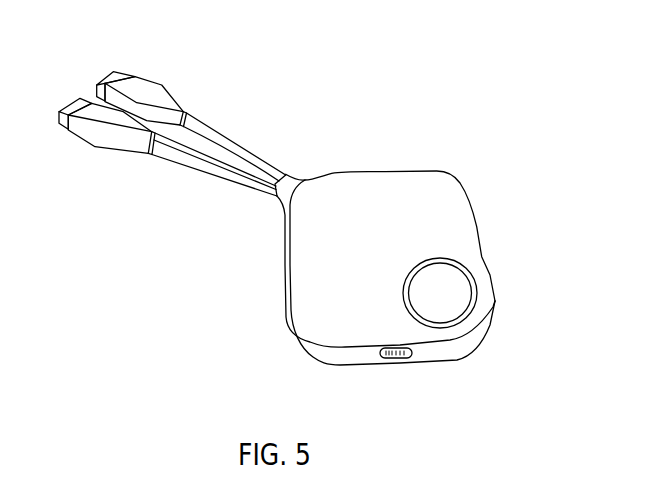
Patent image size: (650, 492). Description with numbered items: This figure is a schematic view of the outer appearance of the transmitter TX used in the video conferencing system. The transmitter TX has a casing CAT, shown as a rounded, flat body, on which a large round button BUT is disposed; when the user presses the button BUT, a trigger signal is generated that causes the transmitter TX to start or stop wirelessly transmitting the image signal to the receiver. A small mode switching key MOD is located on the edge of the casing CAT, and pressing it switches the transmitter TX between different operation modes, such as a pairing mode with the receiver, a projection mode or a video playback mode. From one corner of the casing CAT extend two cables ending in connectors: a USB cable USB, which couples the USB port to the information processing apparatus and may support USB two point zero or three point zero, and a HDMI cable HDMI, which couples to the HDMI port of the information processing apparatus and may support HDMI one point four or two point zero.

The transmitter TX is at (48, 33).
The HDMI cable HDMI is at (143, 90).
The USB cable USB is at (100, 113).
The casing CAT is at (290, 327).
The button BUT is at (450, 290).
The mode switching key MOD is at (407, 359).